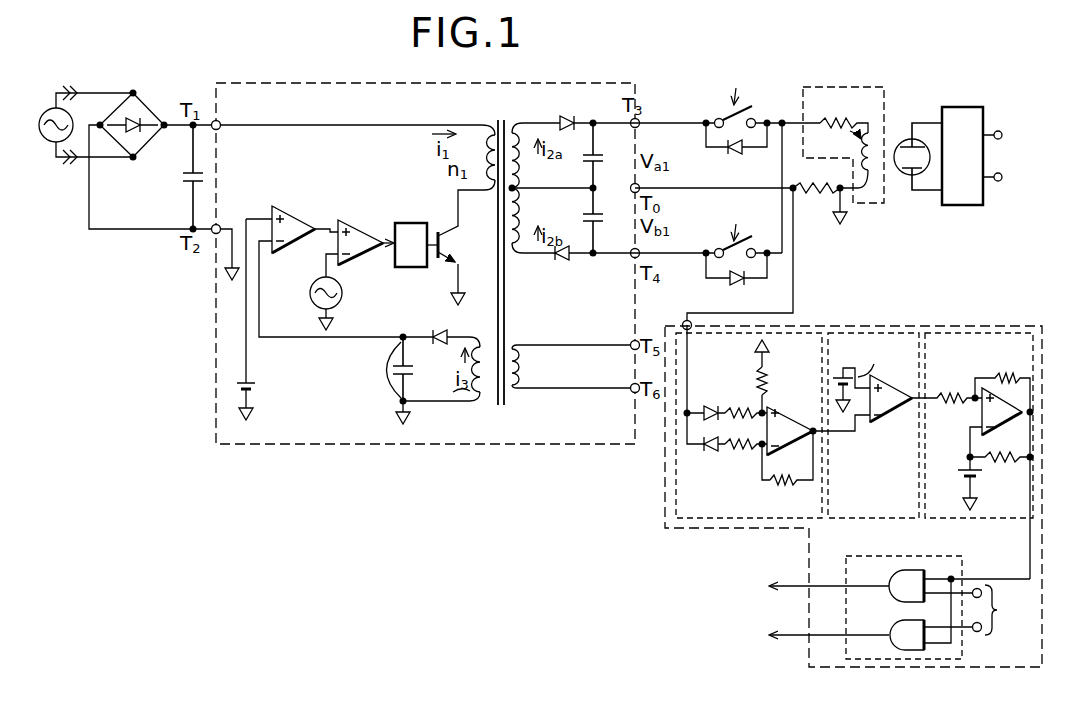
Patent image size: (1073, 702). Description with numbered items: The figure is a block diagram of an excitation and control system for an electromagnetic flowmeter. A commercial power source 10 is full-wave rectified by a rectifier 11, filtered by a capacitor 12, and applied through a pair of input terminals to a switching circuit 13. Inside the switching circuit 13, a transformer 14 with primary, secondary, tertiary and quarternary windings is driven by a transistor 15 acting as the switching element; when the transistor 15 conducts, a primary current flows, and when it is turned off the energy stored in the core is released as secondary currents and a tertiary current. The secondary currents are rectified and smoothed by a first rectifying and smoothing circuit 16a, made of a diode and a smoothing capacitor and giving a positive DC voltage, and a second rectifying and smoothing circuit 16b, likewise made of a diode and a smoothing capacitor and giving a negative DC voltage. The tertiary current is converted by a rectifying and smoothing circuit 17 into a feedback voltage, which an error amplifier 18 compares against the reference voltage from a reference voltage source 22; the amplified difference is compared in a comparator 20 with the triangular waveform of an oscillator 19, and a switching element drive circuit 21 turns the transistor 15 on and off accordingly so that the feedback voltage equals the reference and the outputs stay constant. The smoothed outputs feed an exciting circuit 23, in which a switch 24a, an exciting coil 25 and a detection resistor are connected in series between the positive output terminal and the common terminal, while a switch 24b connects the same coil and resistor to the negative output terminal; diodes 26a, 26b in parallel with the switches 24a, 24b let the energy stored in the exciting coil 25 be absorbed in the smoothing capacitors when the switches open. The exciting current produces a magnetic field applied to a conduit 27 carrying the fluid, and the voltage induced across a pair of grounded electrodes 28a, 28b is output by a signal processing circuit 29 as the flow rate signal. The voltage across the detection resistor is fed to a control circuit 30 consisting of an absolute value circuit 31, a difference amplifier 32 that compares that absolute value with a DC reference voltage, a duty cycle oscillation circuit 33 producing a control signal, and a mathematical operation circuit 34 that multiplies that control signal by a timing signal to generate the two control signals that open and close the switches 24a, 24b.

The commercial power source 10 is at (50, 108).
The rectifier 11 is at (145, 105).
The capacitor 12 is at (183, 178).
The switching circuit 13 is at (290, 82).
The transformer 14 is at (492, 124).
The transistor 15 is at (447, 248).
The first rectifying and smoothing circuit 16a is at (615, 117).
The second rectifying and smoothing circuit 16b is at (615, 265).
The rectifying and smoothing circuit 17 is at (452, 323).
The error amplifier 18 is at (290, 205).
The oscillator 19 is at (342, 292).
The comparator 20 is at (360, 220).
The switching element drive circuit 21 is at (411, 222).
The reference voltage source 22 is at (252, 395).
The exciting circuit 23 is at (790, 103).
The switch 24a is at (729, 112).
The switch 24b is at (722, 247).
The exciting coil 25 is at (838, 85).
The diode 26a is at (735, 155).
The diode 26b is at (738, 286).
The conduit 27 is at (921, 142).
The electrode 28a is at (906, 142).
The electrode 28b is at (907, 172).
The signal processing circuit 29 is at (966, 206).
The control circuit 30 is at (888, 325).
The absolute value circuit 31 is at (790, 333).
The difference amplifier 32 is at (900, 333).
The duty cycle oscillation circuit 33 is at (993, 333).
The mathematical operation circuit 34 is at (898, 556).